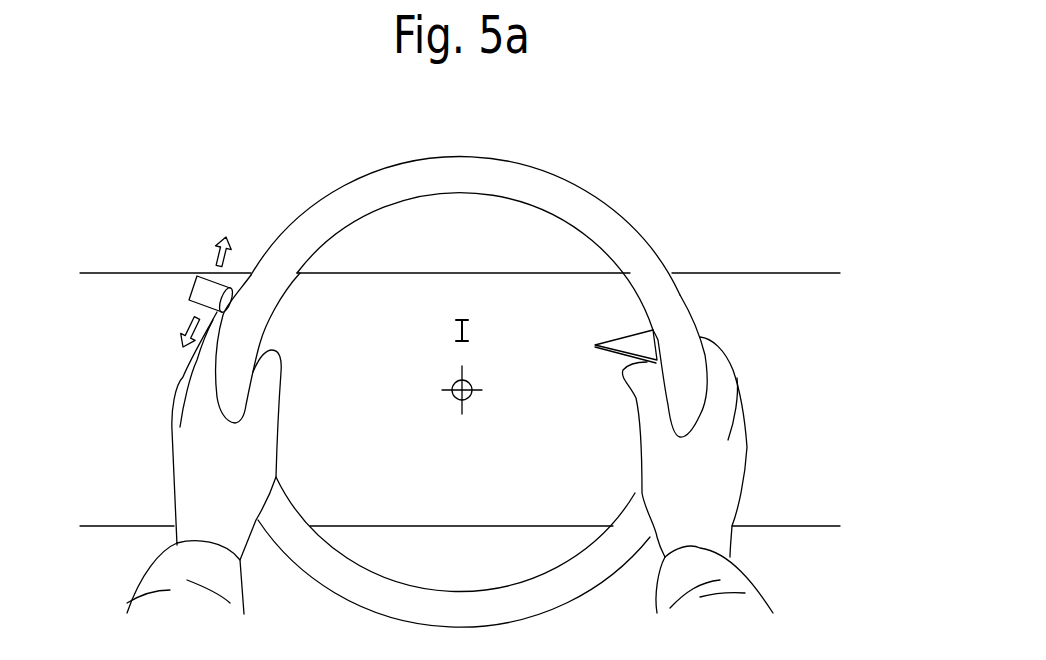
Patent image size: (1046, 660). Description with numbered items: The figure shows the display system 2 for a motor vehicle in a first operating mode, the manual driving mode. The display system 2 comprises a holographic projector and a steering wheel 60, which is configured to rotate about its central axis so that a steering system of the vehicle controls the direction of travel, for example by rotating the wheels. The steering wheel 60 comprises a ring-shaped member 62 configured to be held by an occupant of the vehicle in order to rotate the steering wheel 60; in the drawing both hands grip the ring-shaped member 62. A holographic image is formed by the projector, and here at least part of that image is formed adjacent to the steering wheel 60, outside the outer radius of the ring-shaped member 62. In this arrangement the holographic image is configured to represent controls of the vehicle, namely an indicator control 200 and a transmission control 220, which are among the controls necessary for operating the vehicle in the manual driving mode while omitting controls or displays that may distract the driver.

The display system 2 is at (208, 133).
The steering wheel 60 is at (326, 176).
The ring-shaped member 62 is at (607, 202).
The indicator control 200 is at (200, 292).
The transmission control 220 is at (641, 328).